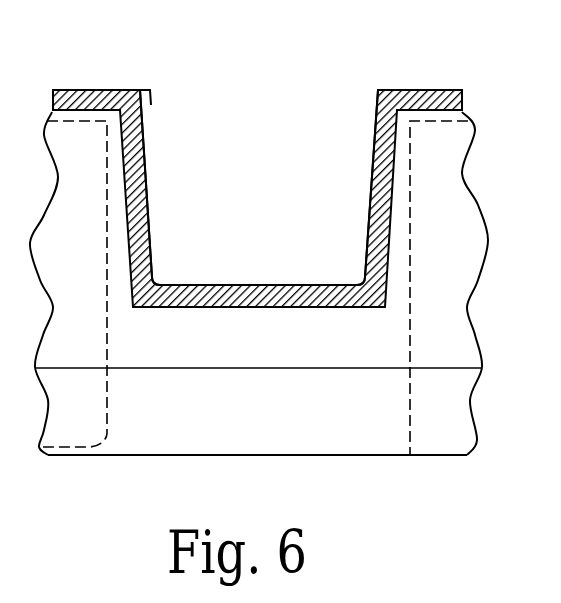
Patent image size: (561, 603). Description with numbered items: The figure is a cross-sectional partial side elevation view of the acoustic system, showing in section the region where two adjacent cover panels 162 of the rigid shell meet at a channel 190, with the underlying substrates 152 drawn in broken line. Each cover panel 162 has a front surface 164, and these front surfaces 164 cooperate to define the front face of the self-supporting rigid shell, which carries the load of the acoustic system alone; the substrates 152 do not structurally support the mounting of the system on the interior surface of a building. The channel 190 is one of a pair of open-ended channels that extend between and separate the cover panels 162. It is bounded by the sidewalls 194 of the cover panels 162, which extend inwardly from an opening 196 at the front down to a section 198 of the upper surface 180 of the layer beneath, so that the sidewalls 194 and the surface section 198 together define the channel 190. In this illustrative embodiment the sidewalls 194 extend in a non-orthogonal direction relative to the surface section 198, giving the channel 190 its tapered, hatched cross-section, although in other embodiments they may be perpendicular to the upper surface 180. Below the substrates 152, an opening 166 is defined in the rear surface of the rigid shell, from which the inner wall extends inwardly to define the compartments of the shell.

The substrate 152 is at (108, 400).
The cover panel 162 is at (141, 108).
The front surface 164 is at (87, 90).
The opening 166 is at (437, 436).
The upper surface 180 is at (178, 283).
The channel 190 is at (258, 160).
The sidewall 194 is at (147, 160).
The opening 196 is at (140, 90).
The section 198 is at (272, 285).